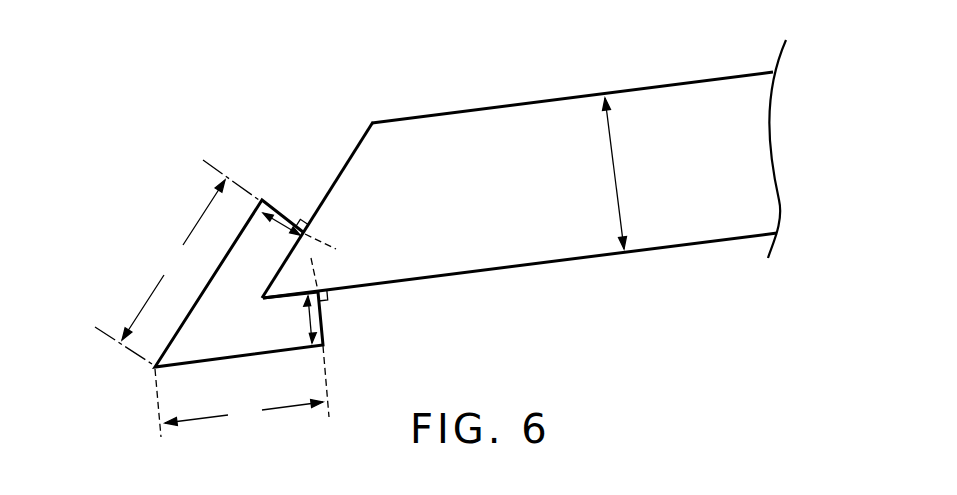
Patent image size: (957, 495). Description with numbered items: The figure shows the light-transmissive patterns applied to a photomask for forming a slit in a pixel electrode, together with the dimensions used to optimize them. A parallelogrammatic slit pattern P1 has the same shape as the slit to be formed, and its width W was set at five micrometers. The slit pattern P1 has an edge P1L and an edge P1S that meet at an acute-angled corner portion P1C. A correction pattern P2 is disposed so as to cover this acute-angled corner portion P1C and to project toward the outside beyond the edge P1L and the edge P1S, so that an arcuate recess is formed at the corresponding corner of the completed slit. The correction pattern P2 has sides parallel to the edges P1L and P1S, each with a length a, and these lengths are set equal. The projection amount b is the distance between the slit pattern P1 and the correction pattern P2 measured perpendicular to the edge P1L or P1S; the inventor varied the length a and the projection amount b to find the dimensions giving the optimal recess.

The slit pattern P1 is at (524, 172).
The edge of the slit pattern P1S is at (337, 178).
The edge of the slit pattern P1L is at (640, 250).
The acute-angled corner portion P1C is at (263, 298).
The correction pattern P2 is at (325, 337).
The width of the slit pattern W is at (628, 173).
The length of one side of the correction pattern a is at (209, 292).
The projection amount b is at (278, 217).